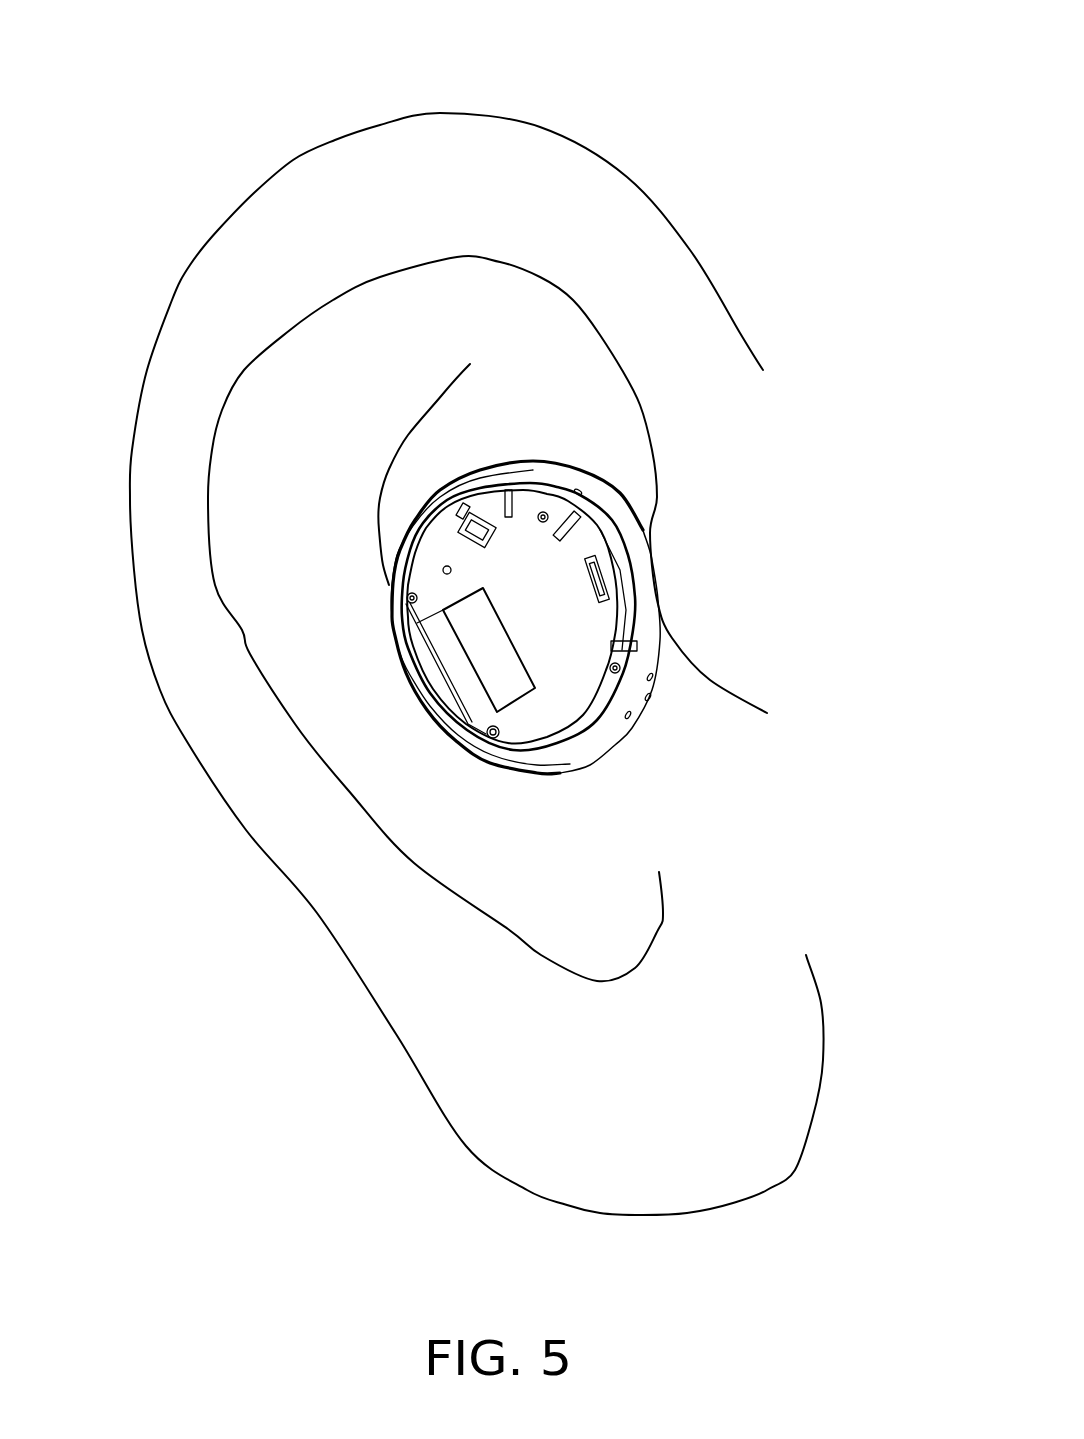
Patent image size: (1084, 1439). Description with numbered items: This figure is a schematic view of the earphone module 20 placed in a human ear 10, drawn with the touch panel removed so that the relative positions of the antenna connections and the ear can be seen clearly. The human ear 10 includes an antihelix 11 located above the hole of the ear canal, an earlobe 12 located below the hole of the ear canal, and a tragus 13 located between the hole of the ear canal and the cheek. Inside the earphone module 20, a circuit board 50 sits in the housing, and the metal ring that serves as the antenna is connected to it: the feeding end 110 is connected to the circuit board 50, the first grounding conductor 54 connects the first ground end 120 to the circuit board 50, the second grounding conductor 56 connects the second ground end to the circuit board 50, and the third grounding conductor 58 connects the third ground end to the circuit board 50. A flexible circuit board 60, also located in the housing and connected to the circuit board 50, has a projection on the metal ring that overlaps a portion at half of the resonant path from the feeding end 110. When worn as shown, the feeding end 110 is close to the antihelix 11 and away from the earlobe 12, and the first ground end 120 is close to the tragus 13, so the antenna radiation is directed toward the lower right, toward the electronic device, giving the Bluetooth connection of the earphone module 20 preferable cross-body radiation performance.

The human ear 10 is at (237, 307).
The antihelix 11 is at (445, 420).
The earlobe 12 is at (662, 1115).
The tragus 13 is at (712, 565).
The earphone module 20 is at (437, 771).
The circuit board 50 is at (543, 585).
The first grounding conductor 54 is at (634, 645).
The second grounding conductor 56 is at (514, 490).
The third grounding conductor 58 is at (572, 515).
The flexible circuit board 60 is at (483, 649).
The feeding end 110 is at (478, 488).
The first ground end 120 is at (637, 648).